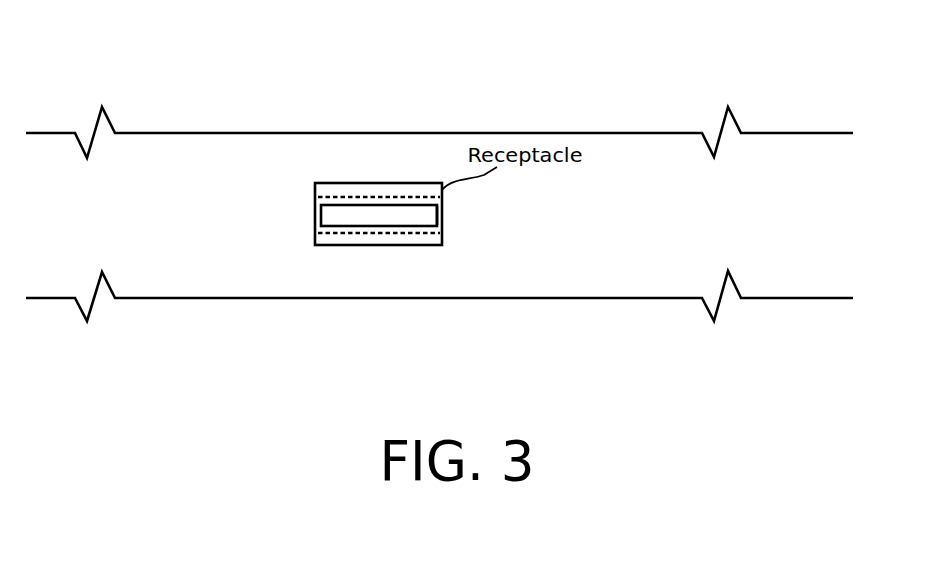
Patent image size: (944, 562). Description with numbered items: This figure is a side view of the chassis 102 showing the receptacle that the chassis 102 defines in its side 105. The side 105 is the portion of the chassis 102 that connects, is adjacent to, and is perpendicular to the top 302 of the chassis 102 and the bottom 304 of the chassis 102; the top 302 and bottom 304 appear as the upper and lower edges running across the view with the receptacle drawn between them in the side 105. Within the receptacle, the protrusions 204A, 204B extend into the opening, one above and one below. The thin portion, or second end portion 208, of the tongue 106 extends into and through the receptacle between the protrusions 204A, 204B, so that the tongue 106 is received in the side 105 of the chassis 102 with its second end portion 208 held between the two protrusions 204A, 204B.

The chassis 102 is at (439, 199).
The top 302 is at (425, 133).
The bottom 304 is at (538, 298).
The side 105 is at (156, 243).
The tongue 106 is at (321, 215).
The protrusion 204A is at (357, 183).
The protrusion 204B is at (407, 227).
The second end portion 208 is at (440, 212).